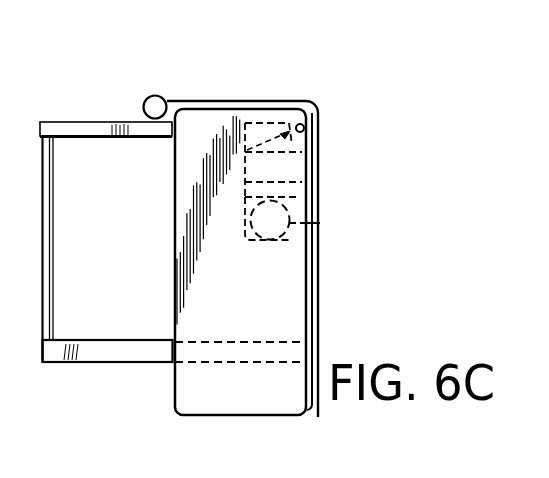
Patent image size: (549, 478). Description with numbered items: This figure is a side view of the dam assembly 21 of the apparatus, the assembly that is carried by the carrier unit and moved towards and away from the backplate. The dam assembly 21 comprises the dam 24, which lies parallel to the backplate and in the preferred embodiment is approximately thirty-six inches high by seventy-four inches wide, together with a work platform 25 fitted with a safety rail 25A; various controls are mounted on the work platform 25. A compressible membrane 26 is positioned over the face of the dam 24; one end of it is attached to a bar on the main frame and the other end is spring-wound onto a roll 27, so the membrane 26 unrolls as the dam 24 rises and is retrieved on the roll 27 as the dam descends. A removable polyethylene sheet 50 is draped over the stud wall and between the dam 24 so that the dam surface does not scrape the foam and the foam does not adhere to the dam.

The dam assembly 21 is at (280, 89).
The dam 24 is at (313, 210).
The work platform 25 is at (92, 340).
The safety rail 25A is at (106, 122).
The compressible membrane 26 is at (322, 184).
The roll 27 is at (320, 223).
The removable polyethylene sheet 50 is at (320, 312).